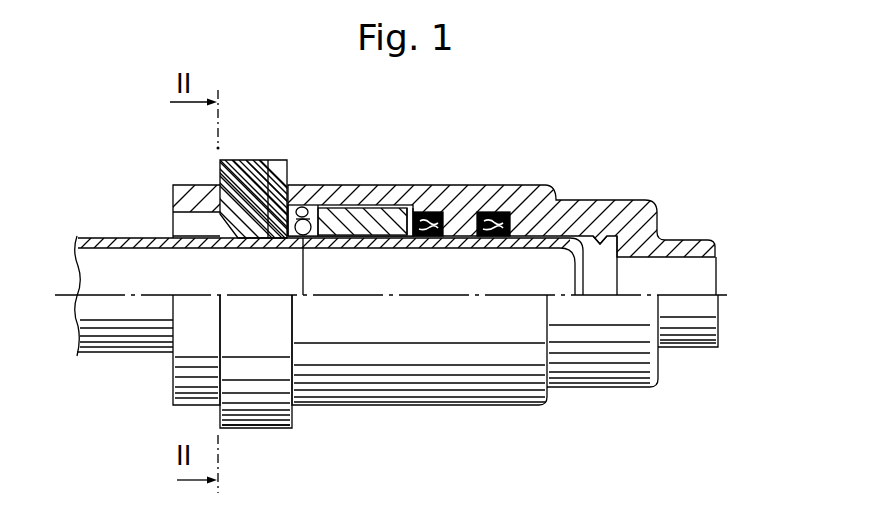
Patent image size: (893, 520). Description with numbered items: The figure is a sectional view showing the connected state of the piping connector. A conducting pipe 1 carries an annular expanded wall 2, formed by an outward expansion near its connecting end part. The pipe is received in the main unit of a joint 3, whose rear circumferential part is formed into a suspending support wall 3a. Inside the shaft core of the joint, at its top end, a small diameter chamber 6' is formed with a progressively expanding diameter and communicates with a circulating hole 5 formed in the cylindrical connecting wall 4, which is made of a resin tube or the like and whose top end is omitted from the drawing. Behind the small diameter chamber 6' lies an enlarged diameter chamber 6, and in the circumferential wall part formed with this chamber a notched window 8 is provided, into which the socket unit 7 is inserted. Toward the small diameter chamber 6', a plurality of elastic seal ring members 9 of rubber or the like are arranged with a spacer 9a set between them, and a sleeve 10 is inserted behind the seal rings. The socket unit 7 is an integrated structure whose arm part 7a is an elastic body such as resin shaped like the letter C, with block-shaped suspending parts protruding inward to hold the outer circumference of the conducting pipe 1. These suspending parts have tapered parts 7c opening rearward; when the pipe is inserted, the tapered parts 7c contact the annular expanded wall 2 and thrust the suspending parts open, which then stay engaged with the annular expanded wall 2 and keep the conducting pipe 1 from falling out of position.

The conducting pipe 1 is at (86, 237).
The annular expanded wall 2 is at (355, 184).
The main unit of a joint 3 is at (530, 190).
The suspending support wall 3a is at (190, 193).
The cylindrical connecting wall 4 is at (690, 340).
The circulating hole 5 is at (705, 271).
The enlarged diameter chamber 6 is at (326, 204).
The small diameter chamber 6' is at (616, 195).
The socket unit 7 is at (238, 152).
The arm part 7a is at (270, 163).
The tapered part 7c is at (170, 232).
The notched window 8 is at (297, 184).
The elastic seal ring member 9 is at (435, 184).
The spacer 9a is at (467, 184).
The sleeve 10 is at (383, 184).